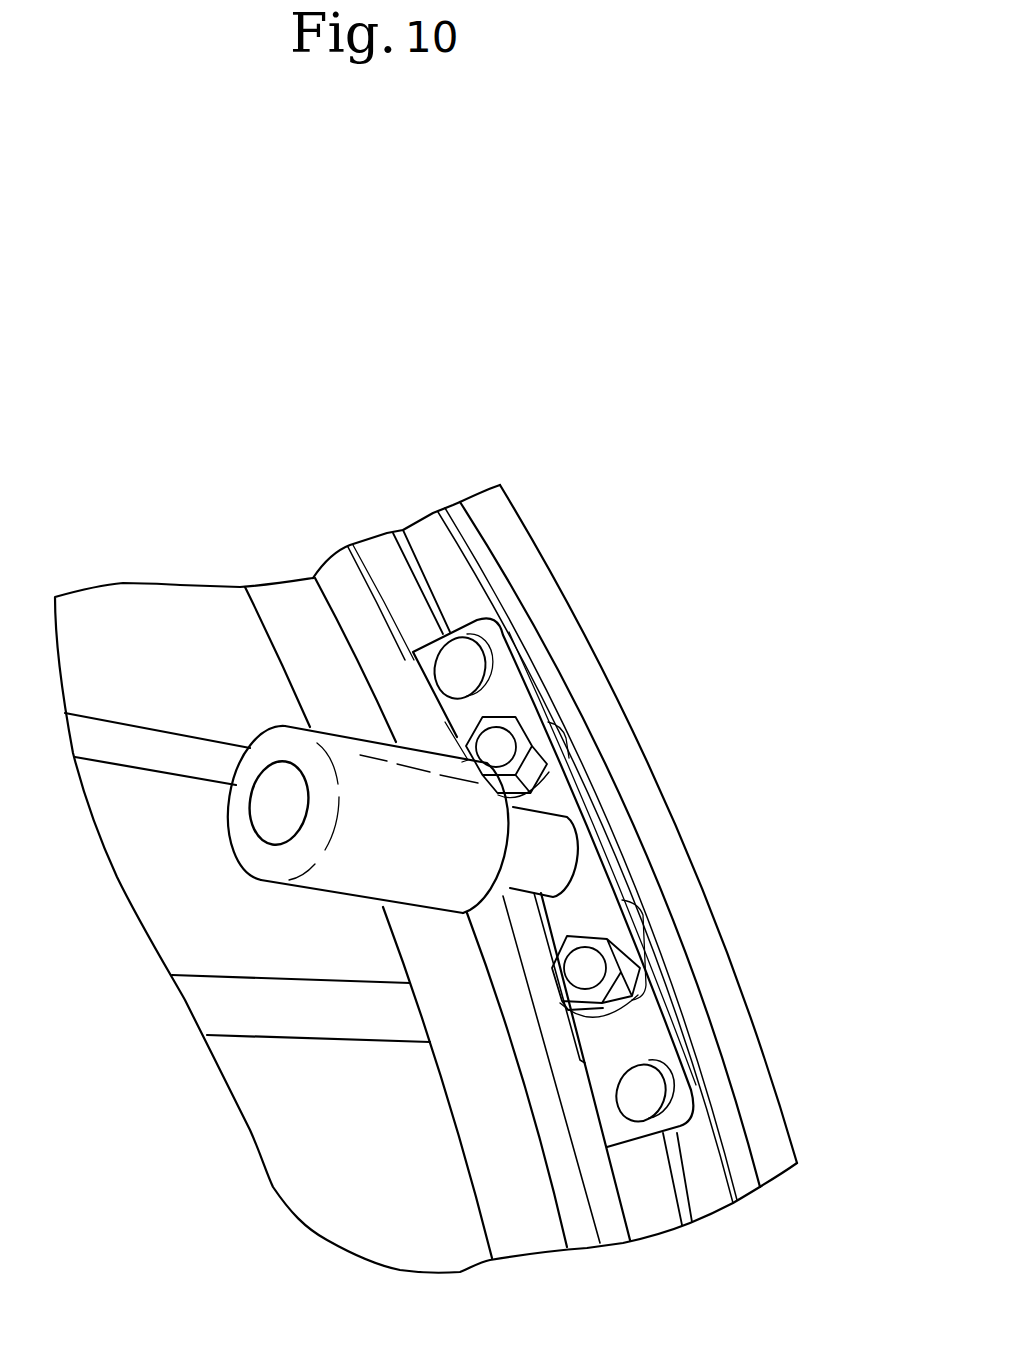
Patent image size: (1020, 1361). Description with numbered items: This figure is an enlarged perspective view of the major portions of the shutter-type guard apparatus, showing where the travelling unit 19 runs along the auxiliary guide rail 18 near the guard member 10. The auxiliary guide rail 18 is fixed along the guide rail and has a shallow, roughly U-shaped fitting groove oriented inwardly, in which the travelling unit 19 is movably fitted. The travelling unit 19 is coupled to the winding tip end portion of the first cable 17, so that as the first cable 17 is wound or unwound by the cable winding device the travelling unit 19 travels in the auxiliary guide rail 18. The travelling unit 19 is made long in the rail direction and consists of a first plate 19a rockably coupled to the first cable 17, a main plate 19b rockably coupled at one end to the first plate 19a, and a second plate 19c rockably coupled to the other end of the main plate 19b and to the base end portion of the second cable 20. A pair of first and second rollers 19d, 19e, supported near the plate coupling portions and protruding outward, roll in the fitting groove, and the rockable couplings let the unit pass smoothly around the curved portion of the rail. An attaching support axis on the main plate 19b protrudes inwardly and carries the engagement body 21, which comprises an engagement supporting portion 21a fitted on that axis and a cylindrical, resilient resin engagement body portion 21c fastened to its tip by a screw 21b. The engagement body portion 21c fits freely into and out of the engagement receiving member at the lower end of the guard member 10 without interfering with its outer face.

The guard member 10 is at (290, 1115).
The first cable 17 is at (408, 553).
The auxiliary guide rail 18 is at (585, 645).
The travelling unit 19 is at (507, 592).
The first plate 19a is at (495, 677).
The main plate 19b is at (583, 917).
The second plate 19c is at (653, 1043).
The first roller 19d is at (567, 775).
The second roller 19e is at (633, 905).
The second cable 20 is at (698, 1212).
The engagement body 21 is at (378, 795).
The engagement supporting portion 21a is at (550, 860).
The screw 21b is at (272, 797).
The engagement body portion 21c is at (363, 873).